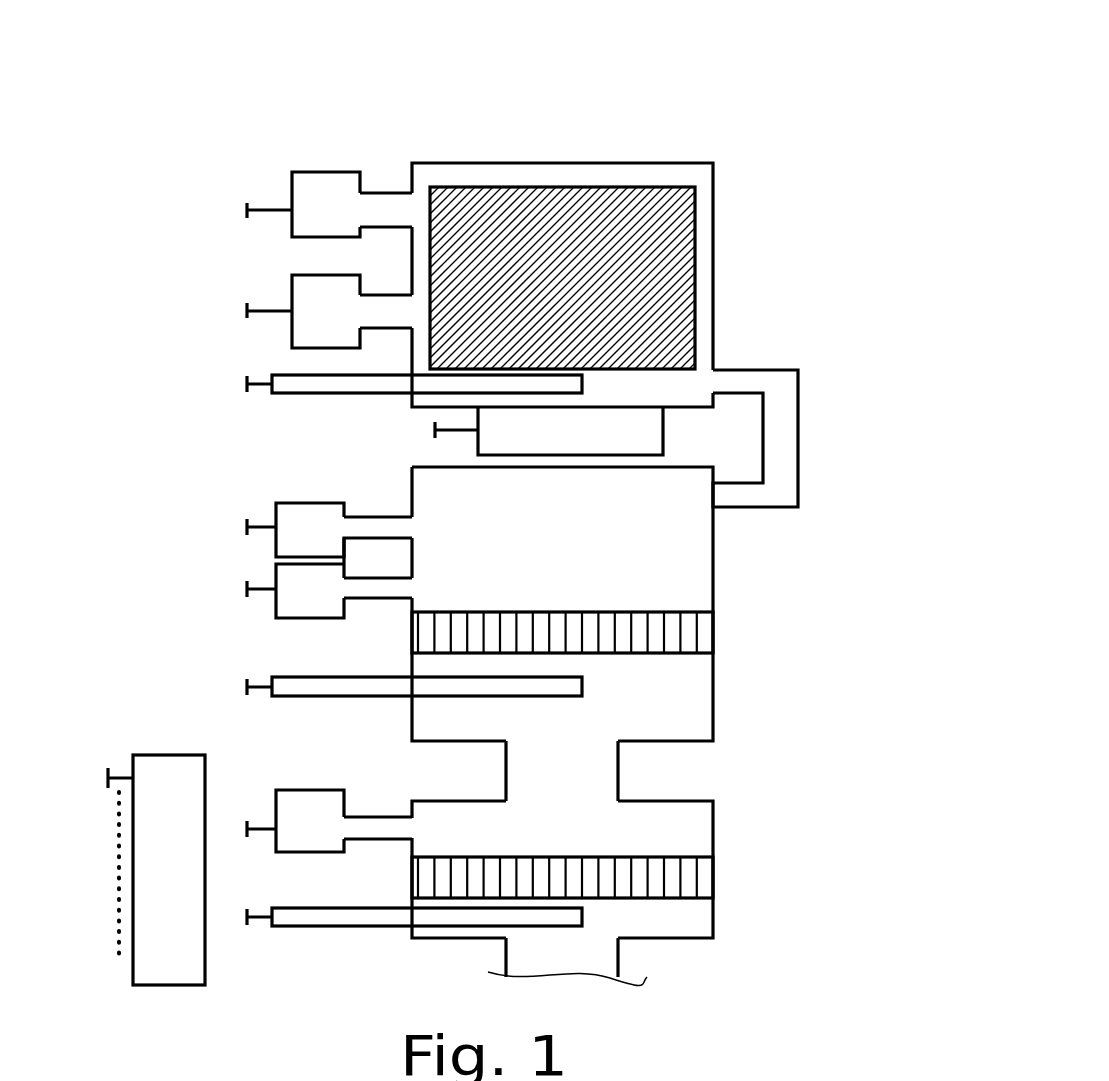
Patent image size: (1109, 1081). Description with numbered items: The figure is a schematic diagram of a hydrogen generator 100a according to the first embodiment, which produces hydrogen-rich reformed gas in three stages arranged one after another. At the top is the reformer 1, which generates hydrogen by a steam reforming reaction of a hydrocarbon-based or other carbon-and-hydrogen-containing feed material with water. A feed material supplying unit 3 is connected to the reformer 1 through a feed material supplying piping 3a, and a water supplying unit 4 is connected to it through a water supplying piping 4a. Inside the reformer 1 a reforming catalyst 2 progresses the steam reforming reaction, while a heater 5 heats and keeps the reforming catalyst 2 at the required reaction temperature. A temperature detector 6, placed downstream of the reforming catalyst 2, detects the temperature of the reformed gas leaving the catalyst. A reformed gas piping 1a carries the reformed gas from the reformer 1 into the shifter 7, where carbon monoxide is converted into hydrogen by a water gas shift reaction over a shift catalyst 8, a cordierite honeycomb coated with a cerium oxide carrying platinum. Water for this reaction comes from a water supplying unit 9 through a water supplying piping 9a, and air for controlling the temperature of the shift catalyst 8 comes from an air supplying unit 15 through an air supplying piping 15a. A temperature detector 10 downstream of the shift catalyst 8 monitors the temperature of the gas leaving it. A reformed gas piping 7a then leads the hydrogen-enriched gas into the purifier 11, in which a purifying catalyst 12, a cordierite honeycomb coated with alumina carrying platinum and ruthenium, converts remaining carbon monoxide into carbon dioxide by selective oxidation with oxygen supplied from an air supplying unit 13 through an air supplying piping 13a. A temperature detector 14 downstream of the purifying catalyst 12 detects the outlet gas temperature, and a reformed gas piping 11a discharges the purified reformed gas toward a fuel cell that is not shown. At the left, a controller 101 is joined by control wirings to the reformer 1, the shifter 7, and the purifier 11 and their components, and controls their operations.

The hydrogen generator 100a is at (845, 103).
The reformer 1 is at (728, 188).
The reforming catalyst 2 is at (692, 263).
The feed material supplying unit 3 is at (297, 192).
The feed material supplying piping 3a is at (393, 203).
The water supplying unit 4 is at (297, 300).
The water supplying piping 4a is at (393, 312).
The temperature detector 6 is at (287, 380).
The reformed gas piping 1a is at (783, 412).
The heater 5 is at (640, 437).
The shifter 7 is at (729, 567).
The shift catalyst 8 is at (672, 632).
The water supplying unit 9 is at (287, 513).
The water supplying piping 9a is at (389, 525).
The air supplying unit 15 is at (287, 577).
The air supplying piping 15a is at (385, 588).
The temperature detector 10 is at (297, 687).
The reformed gas piping 7a is at (587, 768).
The purifier 11 is at (728, 812).
The purifying catalyst 12 is at (672, 878).
The air supplying unit 13 is at (295, 800).
The air supplying piping 13a is at (383, 825).
The temperature detector 14 is at (295, 928).
The reformed gas piping 11a is at (587, 960).
The controller 101 is at (124, 993).